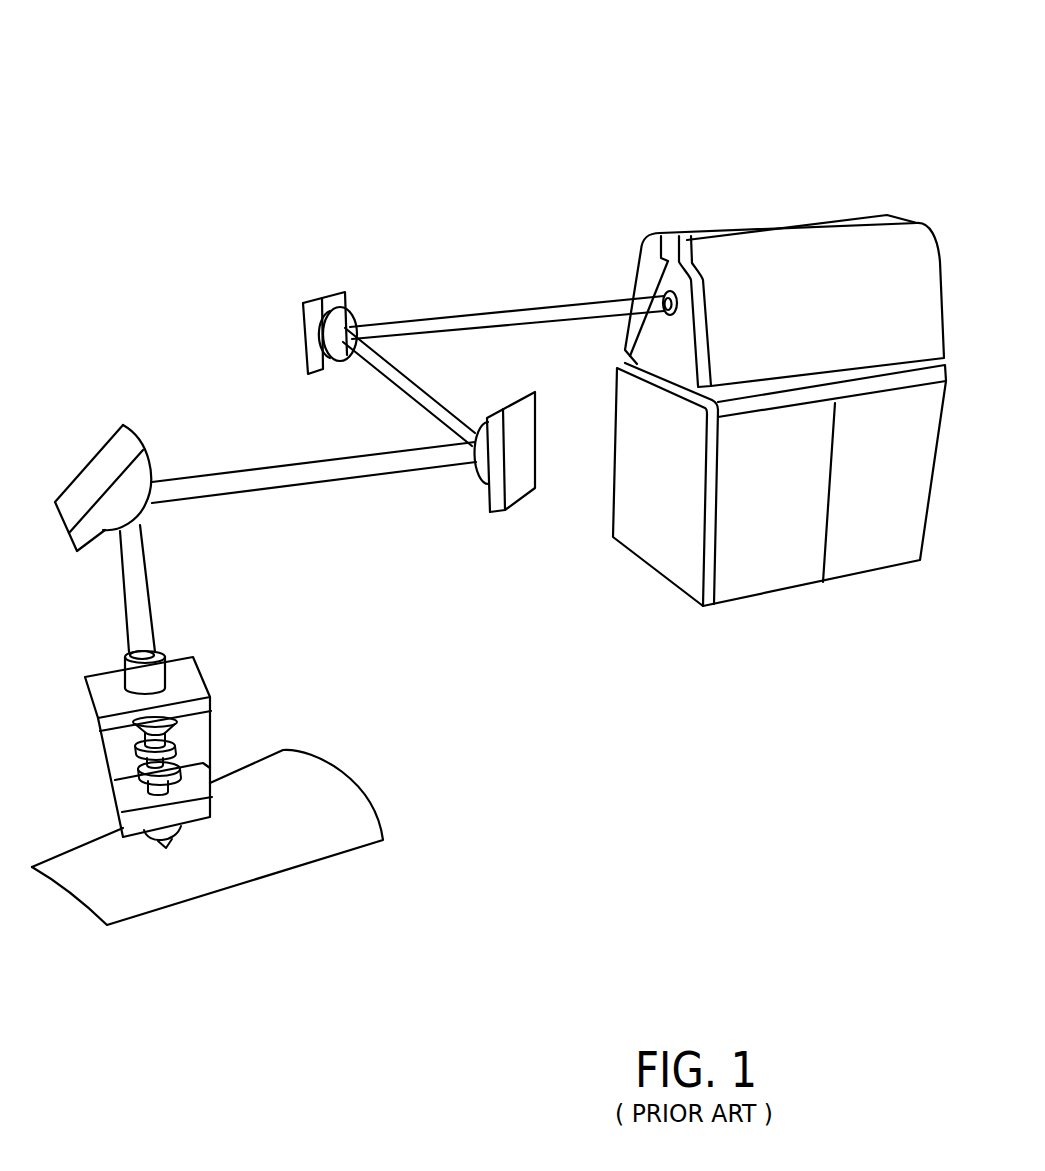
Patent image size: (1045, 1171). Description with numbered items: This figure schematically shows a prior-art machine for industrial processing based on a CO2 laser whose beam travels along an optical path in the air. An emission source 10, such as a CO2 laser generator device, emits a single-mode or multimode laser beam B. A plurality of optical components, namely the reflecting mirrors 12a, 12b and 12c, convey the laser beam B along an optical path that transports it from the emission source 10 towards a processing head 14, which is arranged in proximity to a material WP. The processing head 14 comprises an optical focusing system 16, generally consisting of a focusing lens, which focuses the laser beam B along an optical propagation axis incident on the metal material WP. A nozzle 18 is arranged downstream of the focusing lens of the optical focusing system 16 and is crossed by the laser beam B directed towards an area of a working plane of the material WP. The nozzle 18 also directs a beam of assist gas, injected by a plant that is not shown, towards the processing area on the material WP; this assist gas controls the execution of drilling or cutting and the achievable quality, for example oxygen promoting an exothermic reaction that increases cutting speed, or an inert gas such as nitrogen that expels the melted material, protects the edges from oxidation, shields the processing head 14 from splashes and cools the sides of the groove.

The emission source 10 is at (812, 182).
The laser beam B is at (492, 312).
The reflecting mirror 12a is at (313, 296).
The reflecting mirror 12b is at (515, 470).
The reflecting mirror 12c is at (93, 458).
The processing head 14 is at (215, 660).
The optical focusing system 16 is at (178, 742).
The nozzle 18 is at (150, 838).
The material WP is at (117, 896).